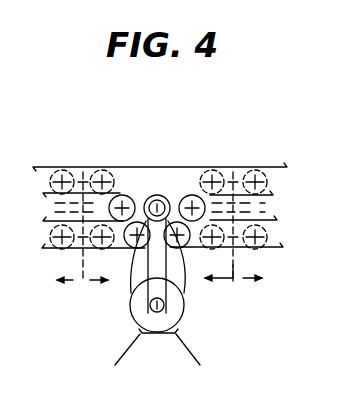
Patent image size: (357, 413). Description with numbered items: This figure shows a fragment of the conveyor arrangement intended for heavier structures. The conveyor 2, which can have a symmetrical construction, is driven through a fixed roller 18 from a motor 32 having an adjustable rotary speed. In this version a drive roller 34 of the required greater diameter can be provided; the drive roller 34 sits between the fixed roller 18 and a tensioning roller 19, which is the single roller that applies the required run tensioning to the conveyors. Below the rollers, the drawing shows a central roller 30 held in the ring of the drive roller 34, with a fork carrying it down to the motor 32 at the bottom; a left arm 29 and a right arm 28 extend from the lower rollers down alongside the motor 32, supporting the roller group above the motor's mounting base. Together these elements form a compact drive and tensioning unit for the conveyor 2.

The conveyor 2 is at (122, 166).
The fixed roller 18 is at (130, 196).
The center roller 30 is at (153, 195).
The drive roller 34 is at (168, 201).
The tensioning roller 19 is at (197, 194).
The left arm 29 is at (128, 288).
The right arm 28 is at (189, 278).
The motor 32 is at (132, 317).